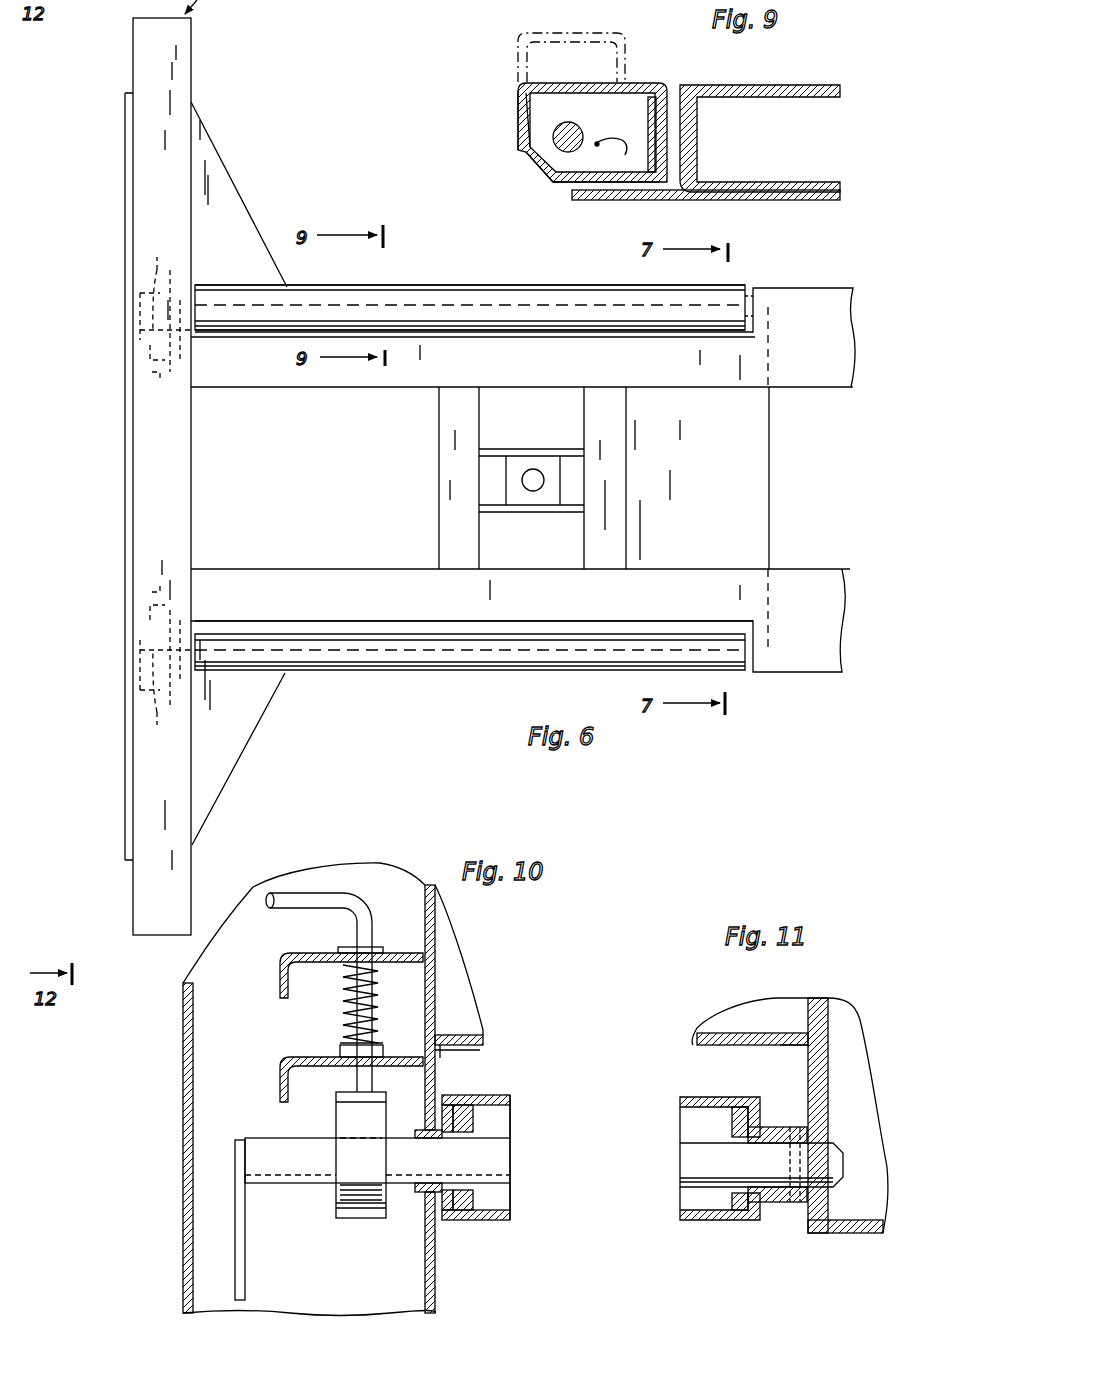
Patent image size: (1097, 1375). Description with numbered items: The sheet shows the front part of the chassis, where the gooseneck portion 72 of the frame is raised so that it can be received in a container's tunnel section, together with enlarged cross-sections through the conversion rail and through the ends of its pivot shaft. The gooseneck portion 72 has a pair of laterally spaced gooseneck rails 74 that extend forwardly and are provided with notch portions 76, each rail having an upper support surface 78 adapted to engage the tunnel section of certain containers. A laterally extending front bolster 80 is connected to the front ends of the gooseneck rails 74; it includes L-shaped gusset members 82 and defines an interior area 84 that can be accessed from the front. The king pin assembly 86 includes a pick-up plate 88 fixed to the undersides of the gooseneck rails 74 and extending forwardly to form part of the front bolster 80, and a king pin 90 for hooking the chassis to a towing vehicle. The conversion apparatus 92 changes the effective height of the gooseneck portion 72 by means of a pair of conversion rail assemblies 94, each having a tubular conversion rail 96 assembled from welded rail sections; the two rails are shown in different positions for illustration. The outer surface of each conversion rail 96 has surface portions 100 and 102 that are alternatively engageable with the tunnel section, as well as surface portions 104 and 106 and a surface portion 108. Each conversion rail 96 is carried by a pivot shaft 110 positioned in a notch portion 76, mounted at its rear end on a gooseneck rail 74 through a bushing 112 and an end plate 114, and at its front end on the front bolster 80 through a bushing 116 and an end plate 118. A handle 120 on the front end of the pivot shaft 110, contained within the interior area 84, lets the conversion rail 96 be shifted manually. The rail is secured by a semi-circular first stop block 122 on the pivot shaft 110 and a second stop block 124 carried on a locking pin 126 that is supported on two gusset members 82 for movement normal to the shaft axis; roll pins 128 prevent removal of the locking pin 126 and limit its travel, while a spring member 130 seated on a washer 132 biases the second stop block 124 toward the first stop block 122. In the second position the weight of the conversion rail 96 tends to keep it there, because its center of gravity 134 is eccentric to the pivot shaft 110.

In FIG. 6, the gooseneck portion 72 is at (770, 282).
In FIG. 6, the gooseneck rails 74 is at (830, 368).
In FIG. 9, the gooseneck rails 74 is at (826, 90).
In FIG. 10, the gooseneck rails 74 is at (455, 1050).
In FIG. 11, the gooseneck rails 74 is at (697, 1040).
In FIG. 6, the notch portions 76 is at (745, 320).
In FIG. 9, the notch portions 76 is at (690, 165).
In FIG. 10, the notch portions 76 is at (450, 1052).
In FIG. 11, the notch portions 76 is at (772, 1046).
In FIG. 6, the upper support surface 78 is at (818, 351).
In FIG. 10, the front bolster 80 is at (440, 1263).
In FIG. 11, the front bolster 80 is at (845, 1115).
In FIG. 10, the L-shaped gusset members 82 is at (280, 990).
In FIG. 6, the interior area 84 is at (158, 476).
In FIG. 10, the interior area 84 is at (185, 1058).
In FIG. 6, the king pin assembly 86 is at (773, 470).
In FIG. 6, the pick-up plate 88 is at (738, 493).
In FIG. 6, the king pin 90 is at (532, 492).
In FIG. 6, the conversion apparatus 92 is at (462, 282).
In FIG. 6, the conversion rail assemblies 94 is at (532, 288).
In FIG. 6, the conversion rail 96 is at (385, 292).
In FIG. 9, the conversion rail 96 is at (523, 150).
In FIG. 10, the conversion rail 96 is at (495, 1222).
In FIG. 11, the conversion rail 96 is at (700, 1219).
In FIG. 6, the surface portion 100 is at (510, 667).
In FIG. 9, the surface portion 100 is at (668, 128).
In FIG. 6, the surface portion 102 is at (285, 300).
In FIG. 9, the surface portion 102 is at (638, 83).
In FIG. 9, the surface portion 104 is at (520, 108).
In FIG. 9, the surface portion 106 is at (578, 183).
In FIG. 9, the surface portion 108 is at (538, 165).
In FIG. 6, the pivot shaft 110 is at (160, 270).
In FIG. 9, the pivot shaft 110 is at (574, 130).
In FIG. 10, the pivot shaft 110 is at (270, 1160).
In FIG. 11, the pivot shaft 110 is at (700, 1160).
In FIG. 11, the bushing 112 is at (785, 1203).
In FIG. 11, the end plate 114 is at (735, 1118).
In FIG. 10, the bushing 116 is at (460, 1098).
In FIG. 10, the end plate 118 is at (468, 1122).
In FIG. 6, the handle 120 is at (138, 313).
In FIG. 10, the handle 120 is at (245, 1277).
In FIG. 6, the first stop block 122 is at (185, 268).
In FIG. 10, the first stop block 122 is at (362, 1205).
In FIG. 10, the second stop block 124 is at (336, 1100).
In FIG. 6, the locking pin 126 is at (135, 395).
In FIG. 10, the locking pin 126 is at (310, 895).
In FIG. 10, the roll pins 128 is at (370, 945).
In FIG. 10, the spring member 130 is at (343, 1000).
In FIG. 10, the washer 132 is at (343, 1045).
In FIG. 9, the center of gravity 134 is at (616, 151).